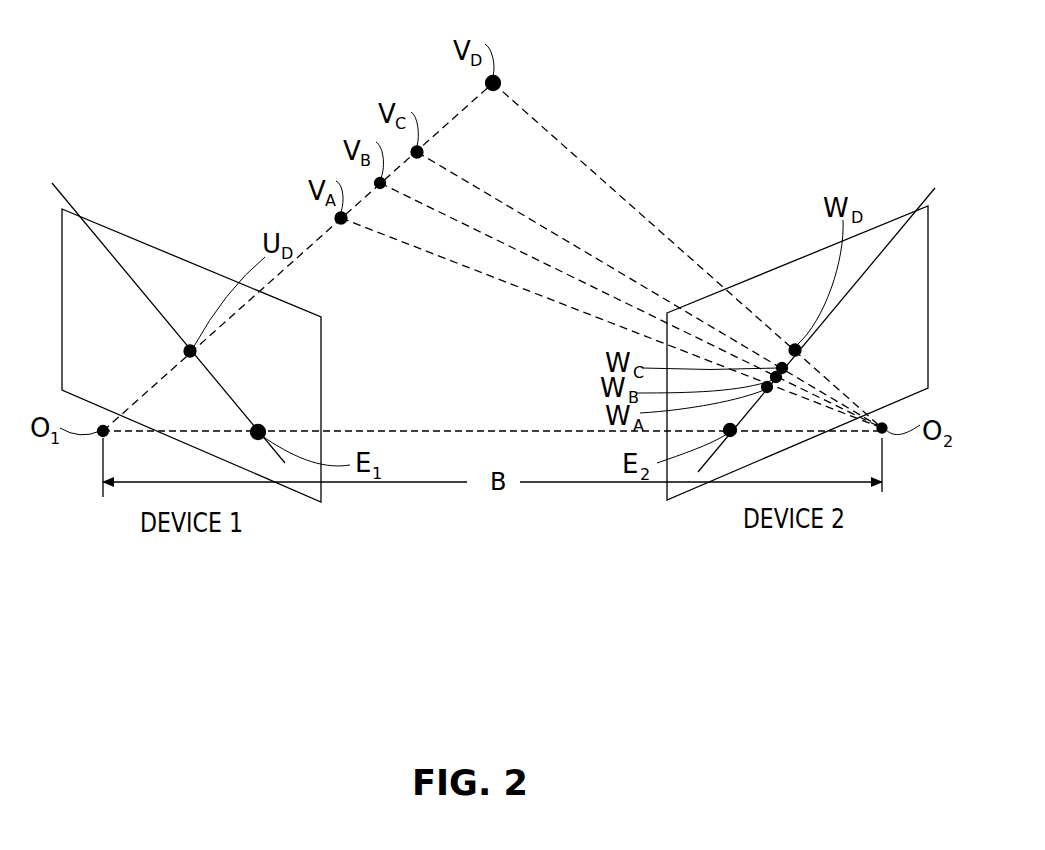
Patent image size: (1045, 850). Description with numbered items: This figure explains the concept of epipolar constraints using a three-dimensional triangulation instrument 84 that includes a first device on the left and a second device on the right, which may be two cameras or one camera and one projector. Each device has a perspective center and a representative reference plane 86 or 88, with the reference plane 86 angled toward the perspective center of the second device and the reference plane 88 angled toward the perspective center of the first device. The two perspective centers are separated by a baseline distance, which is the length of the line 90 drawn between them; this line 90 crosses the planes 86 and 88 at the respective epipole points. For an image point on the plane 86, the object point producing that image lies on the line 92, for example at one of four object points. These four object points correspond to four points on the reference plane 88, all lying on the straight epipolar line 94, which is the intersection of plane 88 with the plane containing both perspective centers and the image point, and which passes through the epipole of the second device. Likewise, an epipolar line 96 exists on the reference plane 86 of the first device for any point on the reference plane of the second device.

The 3D triangulation instrument 84 is at (338, 108).
The reference plane of device 1 86 is at (172, 254).
The reference plane of device 2 88 is at (883, 222).
The line between perspective centers 90 is at (490, 428).
The line of possible object points 92 is at (308, 252).
The epipolar line on reference plane 88 94 is at (926, 200).
The epipolar line on reference plane of device 1 96 is at (63, 194).